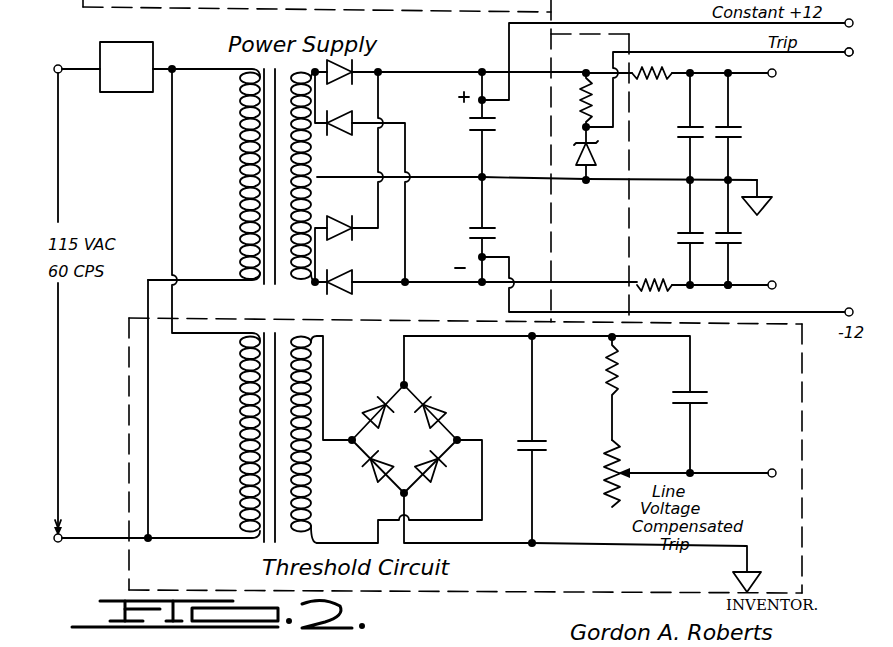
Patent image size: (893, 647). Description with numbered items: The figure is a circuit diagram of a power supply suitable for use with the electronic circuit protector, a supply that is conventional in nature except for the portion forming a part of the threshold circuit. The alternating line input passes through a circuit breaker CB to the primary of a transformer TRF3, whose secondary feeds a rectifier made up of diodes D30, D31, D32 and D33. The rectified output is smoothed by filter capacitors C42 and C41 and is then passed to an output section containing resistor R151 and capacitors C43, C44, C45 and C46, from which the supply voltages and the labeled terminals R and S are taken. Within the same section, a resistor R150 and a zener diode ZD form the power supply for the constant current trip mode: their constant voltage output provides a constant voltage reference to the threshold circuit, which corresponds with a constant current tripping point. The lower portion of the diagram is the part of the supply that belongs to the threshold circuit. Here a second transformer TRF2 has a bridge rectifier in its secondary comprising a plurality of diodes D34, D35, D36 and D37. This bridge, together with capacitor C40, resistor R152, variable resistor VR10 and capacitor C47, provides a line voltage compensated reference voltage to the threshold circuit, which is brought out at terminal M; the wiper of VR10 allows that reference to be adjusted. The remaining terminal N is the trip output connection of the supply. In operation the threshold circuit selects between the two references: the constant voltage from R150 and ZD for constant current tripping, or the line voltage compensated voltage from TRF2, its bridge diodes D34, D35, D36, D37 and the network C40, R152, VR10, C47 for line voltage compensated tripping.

The circuit breaker CB is at (126, 67).
The transformer TRF3 is at (248, 143).
The transformer TRF2 is at (248, 403).
The diode D30 is at (331, 80).
The diode D31 is at (338, 133).
The diode D32 is at (343, 214).
The diode D33 is at (340, 292).
The diode D34 is at (372, 403).
The diode D35 is at (435, 403).
The diode D36 is at (437, 477).
The diode D37 is at (369, 477).
The capacitor C40 is at (540, 442).
The capacitor C41 is at (468, 232).
The capacitor C42 is at (468, 123).
The capacitor C43 is at (686, 128).
The capacitor C44 is at (743, 128).
The capacitor C45 is at (686, 233).
The capacitor C46 is at (743, 233).
The capacitor C47 is at (699, 406).
The resistor R150 is at (586, 86).
The resistor R151 is at (660, 71).
The resistor R152 is at (642, 362).
The variable resistor VR10 is at (642, 441).
The zener diode ZD is at (597, 153).
The terminal R is at (783, 73).
The terminal S is at (783, 285).
The terminal M is at (782, 473).
The terminal N is at (859, 51).